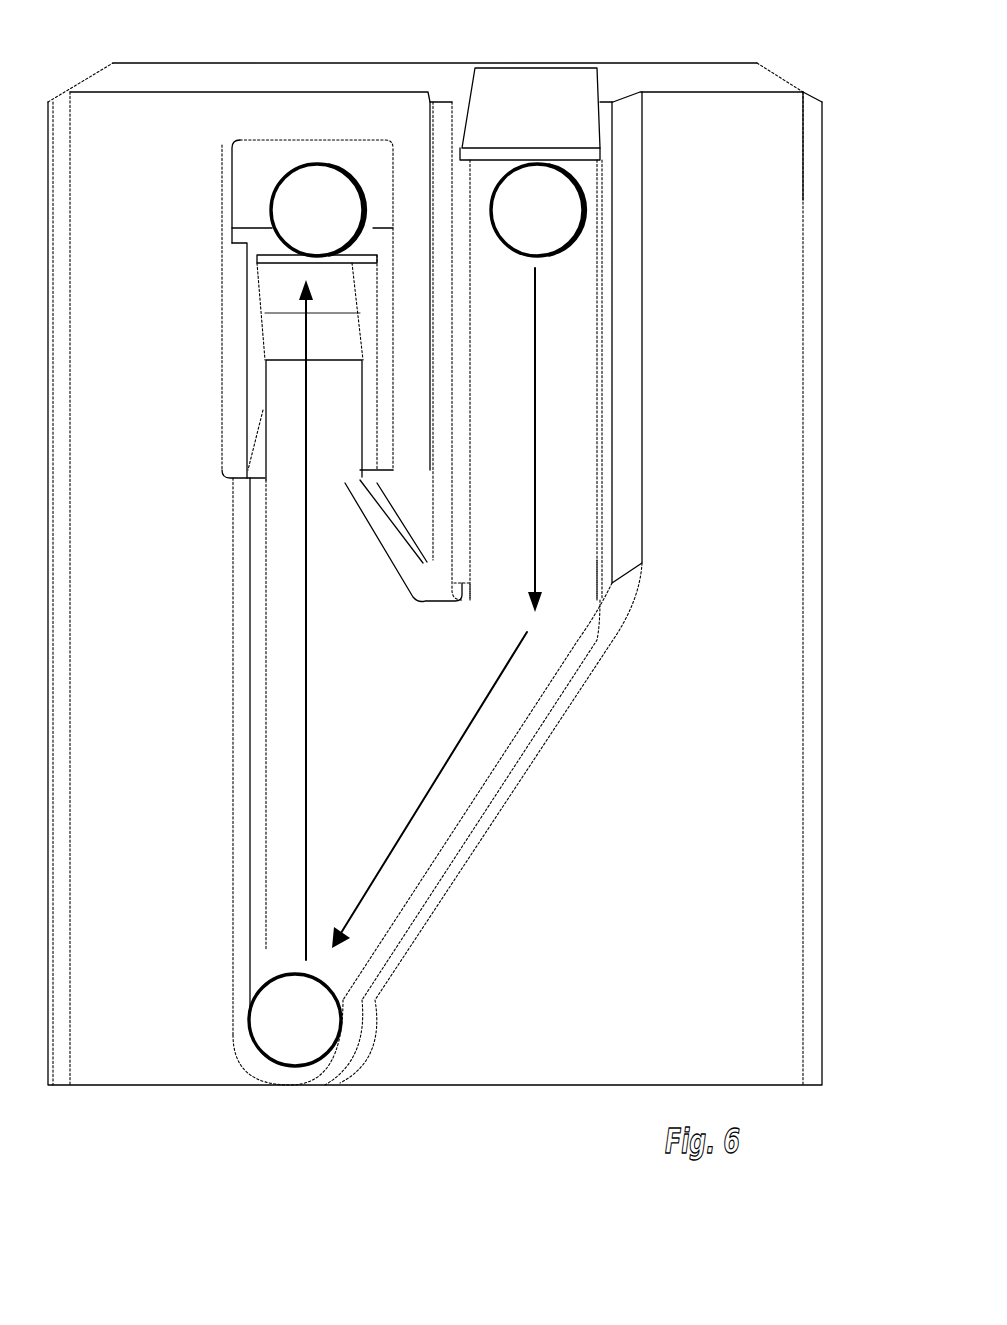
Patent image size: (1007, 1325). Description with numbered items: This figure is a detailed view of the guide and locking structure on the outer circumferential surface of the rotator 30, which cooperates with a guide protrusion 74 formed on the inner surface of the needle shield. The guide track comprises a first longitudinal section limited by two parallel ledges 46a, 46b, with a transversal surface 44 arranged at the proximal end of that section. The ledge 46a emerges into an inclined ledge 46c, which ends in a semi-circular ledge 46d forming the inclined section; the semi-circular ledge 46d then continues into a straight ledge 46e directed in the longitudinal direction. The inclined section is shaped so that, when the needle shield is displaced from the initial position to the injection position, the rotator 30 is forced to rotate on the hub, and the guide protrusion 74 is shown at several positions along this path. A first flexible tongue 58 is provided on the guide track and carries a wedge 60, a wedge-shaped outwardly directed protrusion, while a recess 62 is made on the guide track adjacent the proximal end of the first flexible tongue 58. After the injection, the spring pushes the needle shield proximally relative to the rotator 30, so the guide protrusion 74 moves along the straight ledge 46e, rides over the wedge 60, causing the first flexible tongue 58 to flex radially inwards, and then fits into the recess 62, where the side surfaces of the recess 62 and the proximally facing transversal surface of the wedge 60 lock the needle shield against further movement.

The rotator 30 is at (724, 536).
The transversal surface 44 is at (578, 148).
The ledge 46a is at (627, 427).
The left ledge 46b is at (444, 371).
The inclined ledge 46c is at (467, 823).
The semi-circular ledge 46d is at (352, 1043).
The straight ledge 46e is at (250, 702).
The first flexible tongue 58 is at (341, 424).
The wedge 60 is at (285, 280).
The recess 62 is at (262, 153).
The guide protrusion 74 is at (331, 222).